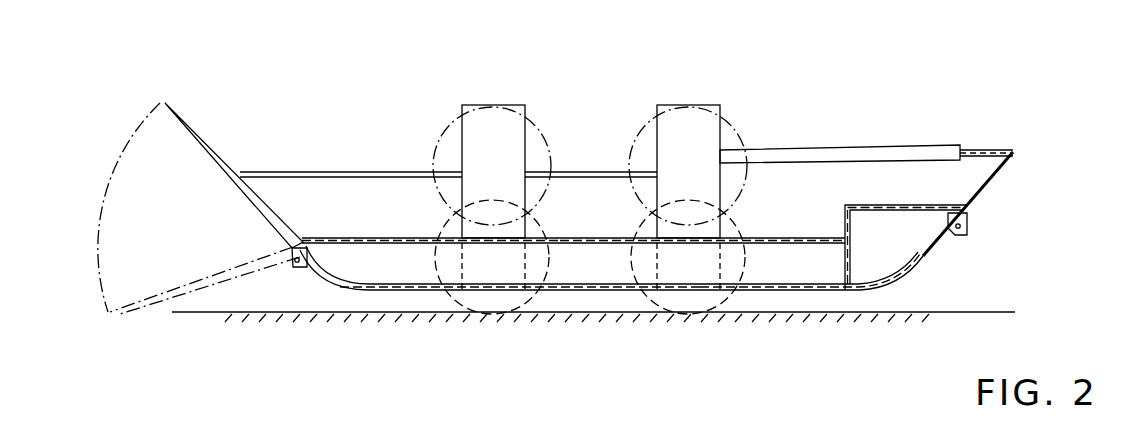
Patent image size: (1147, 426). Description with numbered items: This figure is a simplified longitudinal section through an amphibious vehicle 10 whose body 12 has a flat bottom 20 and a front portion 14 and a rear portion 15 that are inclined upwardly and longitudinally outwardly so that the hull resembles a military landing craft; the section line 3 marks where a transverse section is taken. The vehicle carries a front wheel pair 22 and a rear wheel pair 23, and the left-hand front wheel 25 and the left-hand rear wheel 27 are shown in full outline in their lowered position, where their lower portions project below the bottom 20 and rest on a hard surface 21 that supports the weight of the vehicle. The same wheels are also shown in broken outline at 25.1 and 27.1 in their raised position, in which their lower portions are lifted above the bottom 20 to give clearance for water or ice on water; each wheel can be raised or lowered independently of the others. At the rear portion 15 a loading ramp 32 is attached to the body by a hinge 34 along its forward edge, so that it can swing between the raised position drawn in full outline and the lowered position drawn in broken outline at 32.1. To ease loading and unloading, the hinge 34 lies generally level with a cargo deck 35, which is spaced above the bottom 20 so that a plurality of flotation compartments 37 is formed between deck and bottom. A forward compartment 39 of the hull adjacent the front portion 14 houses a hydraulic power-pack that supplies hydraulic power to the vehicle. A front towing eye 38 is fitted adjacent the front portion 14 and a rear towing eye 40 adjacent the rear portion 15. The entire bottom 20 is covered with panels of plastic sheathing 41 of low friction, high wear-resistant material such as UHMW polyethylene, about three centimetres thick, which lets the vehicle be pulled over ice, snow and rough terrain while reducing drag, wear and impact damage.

The amphibious vehicle 10 is at (978, 123).
The body 12 is at (366, 158).
The front portion 14 is at (1034, 218).
The rear portion 15 is at (258, 294).
The bottom 20 is at (793, 290).
The hard surface 21 is at (902, 312).
The front wheel pair 22 is at (725, 420).
The rear wheel pair 23 is at (443, 420).
The left-hand front wheel 25 is at (740, 227).
The left-hand front wheel in raised position 25.1 is at (740, 127).
The left-hand rear wheel 27 is at (442, 228).
The left-hand rear wheel in raised position 27.1 is at (533, 123).
The section line 3- 3 is at (587, 425).
The loading ramp 32 is at (198, 130).
The loading ramp in lowered position 32.1 is at (153, 303).
The hinge 34 is at (300, 241).
The cargo deck 35 is at (563, 236).
The flotation compartments 37 is at (402, 270).
The front towing eye 38 is at (968, 225).
The forward compartment 39 is at (907, 248).
The rear towing eye 40 is at (295, 268).
The plastic sheathing 41 is at (590, 290).